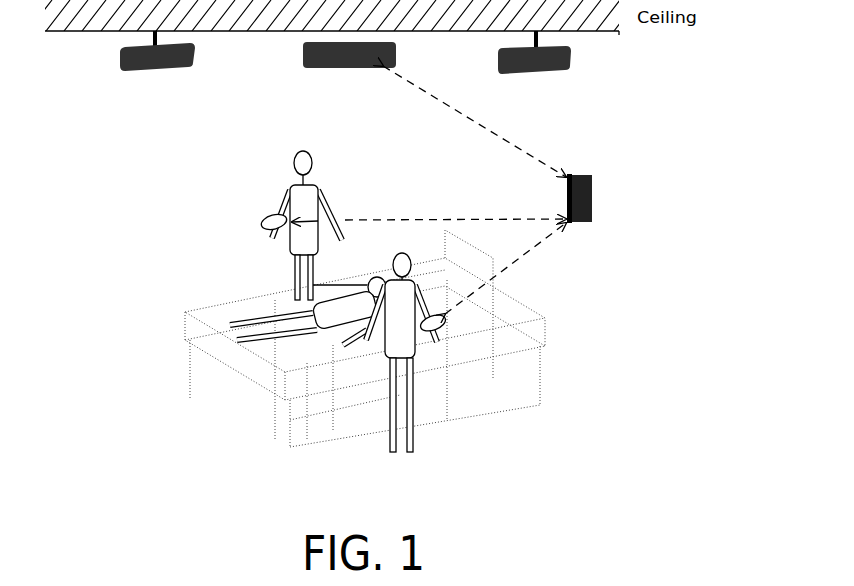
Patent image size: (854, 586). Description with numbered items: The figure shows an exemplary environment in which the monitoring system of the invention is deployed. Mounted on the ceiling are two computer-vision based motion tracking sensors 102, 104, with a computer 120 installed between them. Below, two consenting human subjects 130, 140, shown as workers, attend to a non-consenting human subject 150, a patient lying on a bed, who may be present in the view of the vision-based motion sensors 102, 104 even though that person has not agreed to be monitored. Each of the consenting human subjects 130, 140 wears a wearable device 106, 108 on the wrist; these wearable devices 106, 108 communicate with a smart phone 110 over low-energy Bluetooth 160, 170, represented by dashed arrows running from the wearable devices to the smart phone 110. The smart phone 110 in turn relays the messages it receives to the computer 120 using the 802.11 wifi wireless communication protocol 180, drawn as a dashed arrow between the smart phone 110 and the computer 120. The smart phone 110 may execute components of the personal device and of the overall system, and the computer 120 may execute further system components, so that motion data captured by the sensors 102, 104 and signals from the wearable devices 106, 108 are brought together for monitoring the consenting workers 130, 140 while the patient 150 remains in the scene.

The computer-vision based motion tracking sensor 102 is at (148, 123).
The computer-vision based motion tracking sensor 104 is at (638, 120).
The wearable device 106 is at (260, 220).
The wearable device 108 is at (440, 325).
The smart phone 110 is at (673, 231).
The computer 120 is at (365, 113).
The human subject 130 is at (401, 208).
The human subject 140 is at (491, 455).
The non-consenting human subject 150 is at (209, 385).
The low-energy Bluetooth 160 is at (483, 243).
The low-energy Bluetooth 170 is at (637, 281).
The wifi wireless communication protocol 180 is at (522, 155).